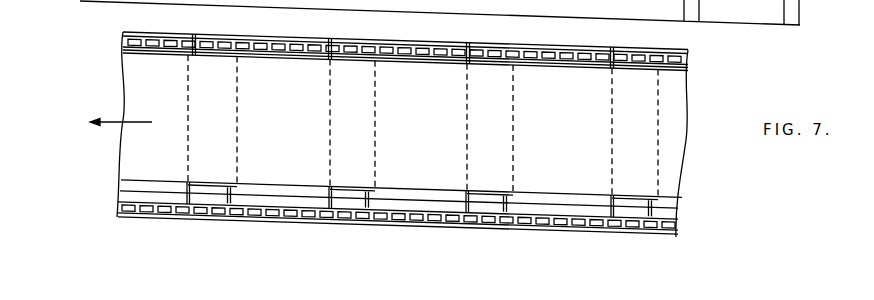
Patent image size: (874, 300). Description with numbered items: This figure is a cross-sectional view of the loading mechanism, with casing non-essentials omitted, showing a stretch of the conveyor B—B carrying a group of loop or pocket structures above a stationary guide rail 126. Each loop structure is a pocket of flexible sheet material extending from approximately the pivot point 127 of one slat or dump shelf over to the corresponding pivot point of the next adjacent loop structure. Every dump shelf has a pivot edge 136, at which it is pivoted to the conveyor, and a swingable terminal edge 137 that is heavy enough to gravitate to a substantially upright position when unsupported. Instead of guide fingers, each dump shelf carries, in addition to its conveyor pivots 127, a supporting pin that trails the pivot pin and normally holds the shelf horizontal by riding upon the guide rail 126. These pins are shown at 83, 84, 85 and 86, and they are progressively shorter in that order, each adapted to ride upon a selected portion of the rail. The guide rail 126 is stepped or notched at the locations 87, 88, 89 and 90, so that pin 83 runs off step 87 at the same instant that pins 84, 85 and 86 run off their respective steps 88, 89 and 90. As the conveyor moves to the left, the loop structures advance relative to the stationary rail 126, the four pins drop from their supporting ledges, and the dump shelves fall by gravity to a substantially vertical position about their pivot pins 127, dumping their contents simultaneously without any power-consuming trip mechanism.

The conveyor B is at (676, 218).
The pivot point 127 is at (195, 35).
The pivot edge 136 is at (188, 103).
The swingable terminal edge 137 is at (238, 123).
The guide rail 126 is at (640, 213).
The step 87 is at (224, 202).
The supporting pin 83 is at (231, 186).
The step 88 is at (358, 202).
The supporting pin 84 is at (371, 197).
The step 89 is at (502, 198).
The supporting pin 85 is at (510, 196).
The step 90 is at (645, 203).
The supporting pin 86 is at (676, 186).